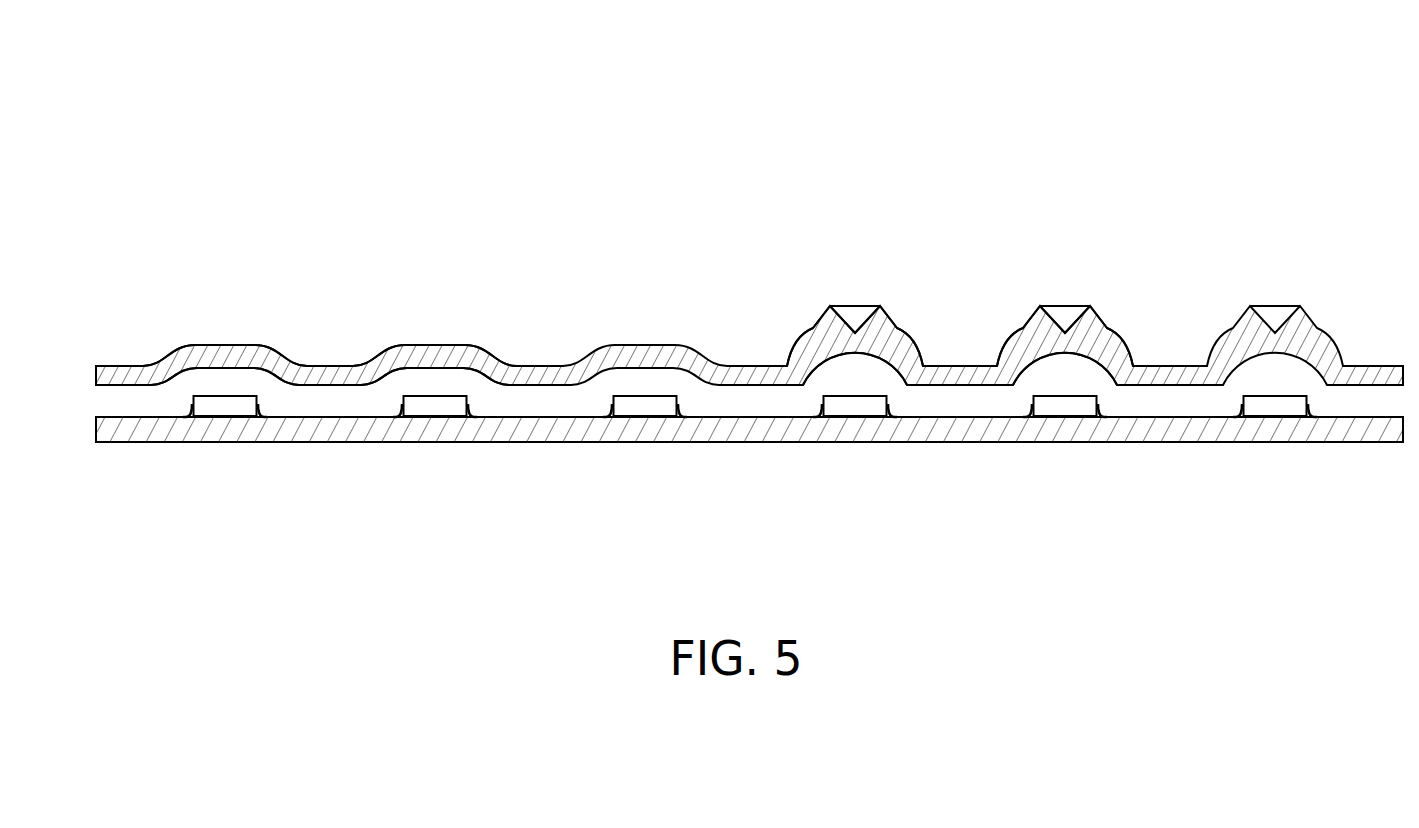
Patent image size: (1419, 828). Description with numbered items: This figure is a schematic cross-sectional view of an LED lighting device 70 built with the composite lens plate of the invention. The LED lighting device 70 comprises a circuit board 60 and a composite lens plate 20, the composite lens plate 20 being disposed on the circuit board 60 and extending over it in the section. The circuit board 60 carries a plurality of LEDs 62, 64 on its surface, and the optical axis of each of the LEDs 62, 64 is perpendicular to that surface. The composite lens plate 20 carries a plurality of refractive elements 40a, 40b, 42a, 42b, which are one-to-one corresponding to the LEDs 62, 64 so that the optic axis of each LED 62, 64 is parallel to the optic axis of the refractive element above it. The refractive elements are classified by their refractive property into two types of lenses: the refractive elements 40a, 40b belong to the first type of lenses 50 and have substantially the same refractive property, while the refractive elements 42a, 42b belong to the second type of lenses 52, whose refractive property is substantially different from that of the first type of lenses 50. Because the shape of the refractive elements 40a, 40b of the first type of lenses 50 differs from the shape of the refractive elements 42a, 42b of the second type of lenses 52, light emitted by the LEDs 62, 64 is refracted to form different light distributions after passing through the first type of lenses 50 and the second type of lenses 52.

The LED lighting device 70 is at (395, 85).
The composite lens plate 20 is at (1378, 364).
The first type of lenses 50 is at (330, 302).
The refractive element 40a is at (250, 348).
The refractive element 40b is at (435, 327).
The second type of lenses 52 is at (960, 286).
The refractive element 42a is at (865, 302).
The refractive element 42b is at (1065, 310).
The circuit board 60 is at (997, 433).
The LED 62 is at (433, 408).
The LED 64 is at (858, 408).